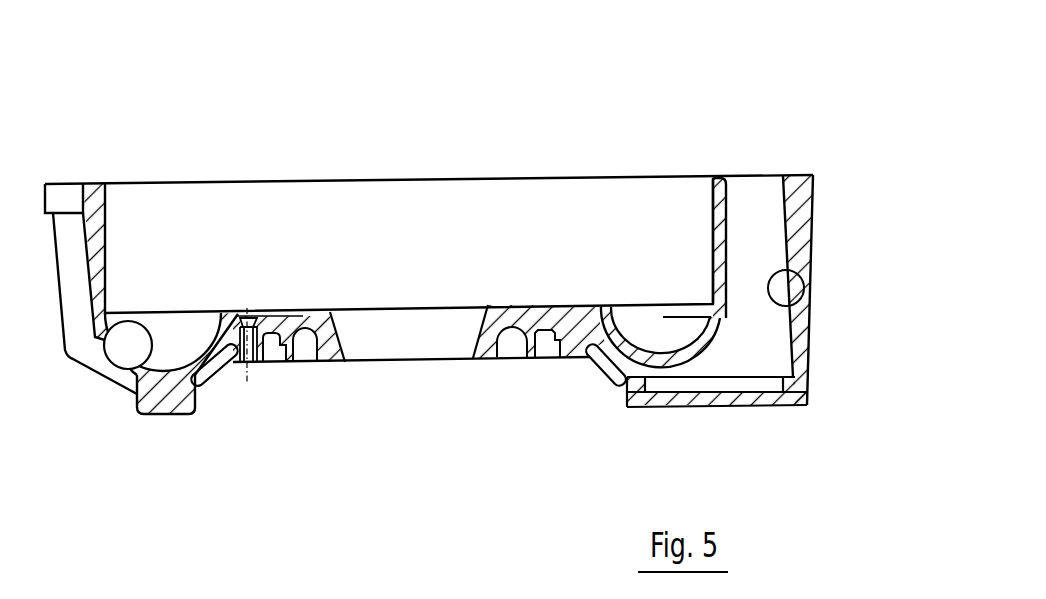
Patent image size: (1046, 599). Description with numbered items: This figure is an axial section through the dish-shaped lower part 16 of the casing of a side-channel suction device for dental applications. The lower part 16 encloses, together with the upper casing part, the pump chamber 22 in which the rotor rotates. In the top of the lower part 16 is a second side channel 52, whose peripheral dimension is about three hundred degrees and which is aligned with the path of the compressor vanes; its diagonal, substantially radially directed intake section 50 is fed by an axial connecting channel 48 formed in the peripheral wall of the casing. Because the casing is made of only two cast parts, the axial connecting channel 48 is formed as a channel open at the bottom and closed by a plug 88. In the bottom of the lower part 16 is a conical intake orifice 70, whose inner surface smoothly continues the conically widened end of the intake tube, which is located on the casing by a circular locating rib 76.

The lower part 16 is at (373, 172).
The pump chamber 22 is at (409, 245).
The axial connecting channel 48 is at (812, 308).
The intake section 50 is at (692, 310).
The second side channel 52 is at (122, 372).
The intake orifice 70 is at (343, 352).
The locating rib 76 is at (522, 360).
The plug 88 is at (764, 386).